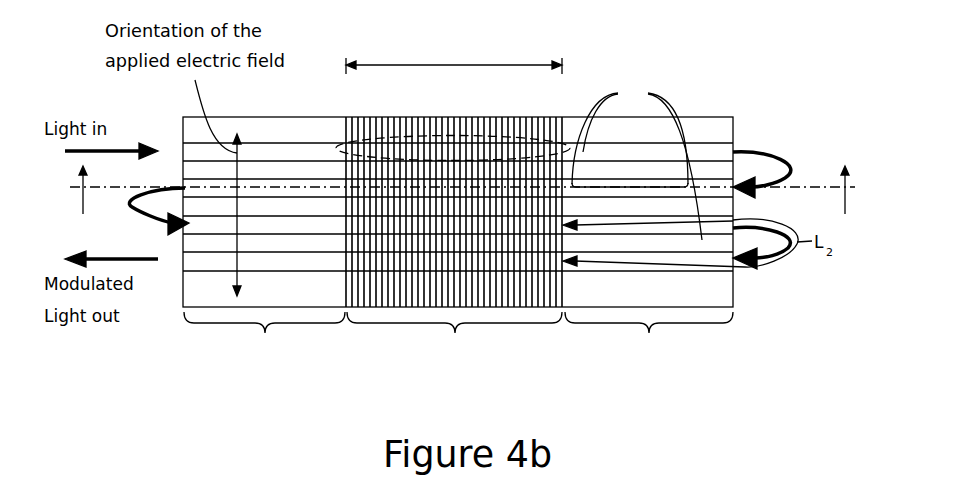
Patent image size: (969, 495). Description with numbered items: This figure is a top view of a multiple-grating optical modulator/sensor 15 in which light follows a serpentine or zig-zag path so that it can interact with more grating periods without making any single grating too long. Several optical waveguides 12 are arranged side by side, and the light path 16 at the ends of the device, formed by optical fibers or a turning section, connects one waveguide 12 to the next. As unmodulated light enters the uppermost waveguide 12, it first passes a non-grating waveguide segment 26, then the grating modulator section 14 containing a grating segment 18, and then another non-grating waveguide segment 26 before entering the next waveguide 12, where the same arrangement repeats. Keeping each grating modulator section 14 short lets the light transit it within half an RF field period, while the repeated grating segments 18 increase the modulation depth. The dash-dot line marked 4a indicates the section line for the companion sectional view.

The multiple-grating optical modulator/sensor 15 is at (702, 75).
The section line 4a is at (464, 191).
The light path 16 is at (138, 222).
The grating segment 18 is at (395, 137).
The grating modulator section 14 is at (454, 216).
The waveguide 12 is at (637, 163).
The non-grating waveguide segment 26 is at (463, 349).